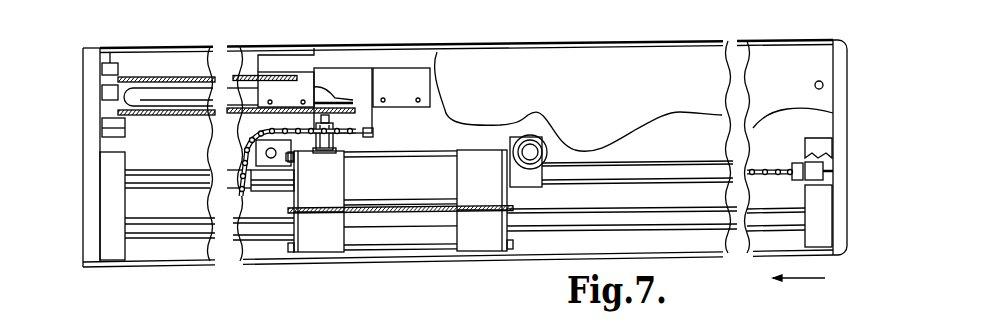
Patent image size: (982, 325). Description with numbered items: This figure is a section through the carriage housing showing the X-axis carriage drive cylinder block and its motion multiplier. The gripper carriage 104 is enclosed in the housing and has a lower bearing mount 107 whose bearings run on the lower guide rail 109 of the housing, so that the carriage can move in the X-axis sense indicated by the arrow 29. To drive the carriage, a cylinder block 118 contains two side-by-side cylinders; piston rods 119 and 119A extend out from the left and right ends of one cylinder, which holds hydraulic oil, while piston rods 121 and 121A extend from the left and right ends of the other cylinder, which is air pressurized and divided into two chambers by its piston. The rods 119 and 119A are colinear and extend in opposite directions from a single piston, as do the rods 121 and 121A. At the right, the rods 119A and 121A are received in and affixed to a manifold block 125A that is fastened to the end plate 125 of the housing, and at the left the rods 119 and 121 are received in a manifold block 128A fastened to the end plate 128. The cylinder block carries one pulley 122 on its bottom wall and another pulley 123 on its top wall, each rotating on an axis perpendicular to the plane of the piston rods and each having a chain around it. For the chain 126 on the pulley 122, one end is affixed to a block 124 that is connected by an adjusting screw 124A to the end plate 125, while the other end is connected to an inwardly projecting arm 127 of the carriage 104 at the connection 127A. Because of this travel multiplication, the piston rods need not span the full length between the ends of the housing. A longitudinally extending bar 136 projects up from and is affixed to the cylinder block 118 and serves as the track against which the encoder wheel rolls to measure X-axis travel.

The arrow 29 is at (803, 278).
The gripper carriage 104 is at (318, 57).
The lower bearing mount 107 is at (253, 50).
The lower guide rail 109 is at (190, 100).
The cylinder block 118 is at (437, 237).
The piston rod 119 is at (145, 180).
The piston rod 119A is at (666, 168).
The piston rod 121 is at (195, 231).
The piston rod 121A is at (643, 215).
The pulley 122 is at (246, 173).
The pulley 123 is at (543, 143).
The block 124 is at (813, 173).
The adjusting screw 124A is at (830, 173).
The end plate 125 is at (840, 119).
The manifold block 125A is at (827, 150).
The chain 126 is at (240, 152).
The inwardly projecting arm 127 is at (353, 80).
The chain connection point 127A is at (378, 130).
The end plate 128 is at (93, 212).
The manifold block 128A is at (113, 253).
The bar 136 is at (416, 212).